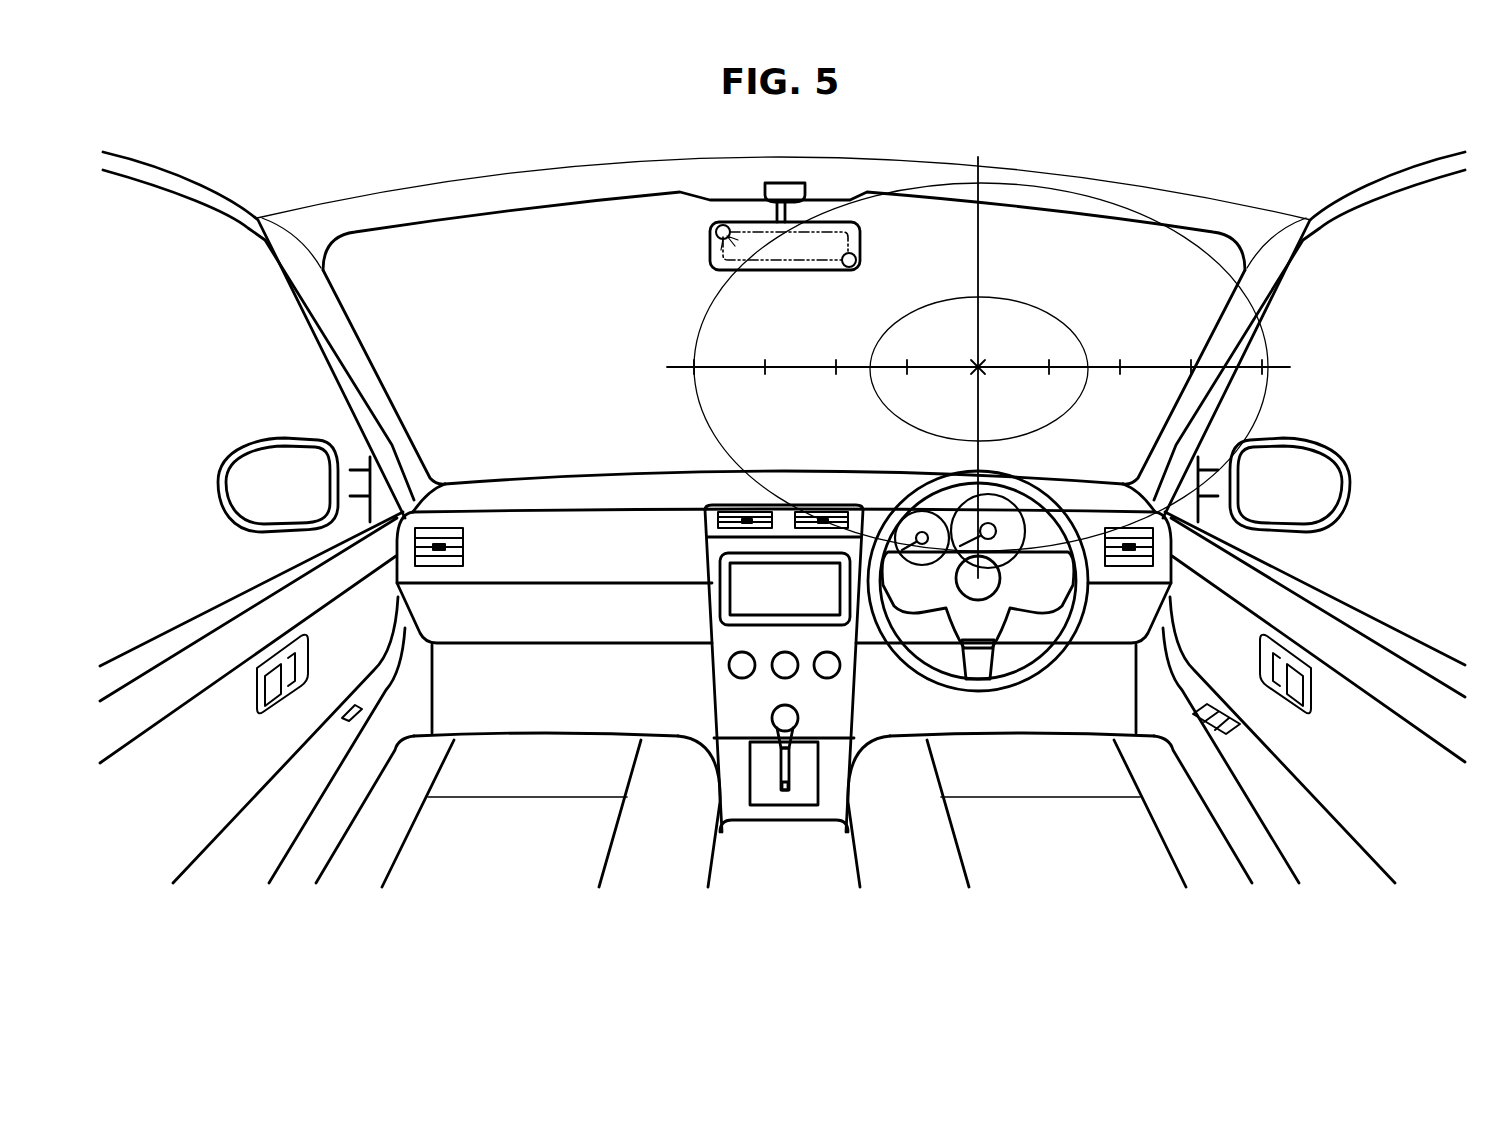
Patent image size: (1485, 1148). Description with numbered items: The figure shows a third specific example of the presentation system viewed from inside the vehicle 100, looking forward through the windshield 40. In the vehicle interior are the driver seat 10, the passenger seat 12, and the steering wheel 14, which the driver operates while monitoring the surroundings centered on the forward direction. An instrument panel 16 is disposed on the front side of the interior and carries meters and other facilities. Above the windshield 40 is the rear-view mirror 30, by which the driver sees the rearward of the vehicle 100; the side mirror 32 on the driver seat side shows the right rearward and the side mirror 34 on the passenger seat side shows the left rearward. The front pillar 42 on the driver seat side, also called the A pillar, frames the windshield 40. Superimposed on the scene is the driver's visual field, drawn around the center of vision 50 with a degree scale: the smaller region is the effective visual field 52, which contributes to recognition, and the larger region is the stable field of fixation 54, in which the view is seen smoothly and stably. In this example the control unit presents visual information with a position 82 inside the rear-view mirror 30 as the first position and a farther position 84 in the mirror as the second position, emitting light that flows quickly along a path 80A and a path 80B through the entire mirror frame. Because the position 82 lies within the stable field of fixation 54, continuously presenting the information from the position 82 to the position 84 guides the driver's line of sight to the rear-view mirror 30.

The driver seat 10 is at (1054, 865).
The passenger seat 12 is at (482, 866).
The steering wheel 14 is at (1040, 670).
The instrument panel 16 is at (581, 499).
The rear-view mirror 30 is at (793, 252).
The side mirror on a driver seat side 32 is at (1352, 484).
The side mirror on a passenger seat side 34 is at (216, 484).
The windshield 40 is at (400, 255).
The front pillar 42 is at (1268, 270).
The center of vision 50 is at (975, 371).
The effective visual field 52 is at (882, 400).
The stable field of fixation 54 is at (697, 410).
The path 80A is at (765, 272).
The path 80B is at (860, 245).
The position 82 is at (847, 270).
The position 84 is at (716, 233).
The vehicle 100 is at (1275, 123).